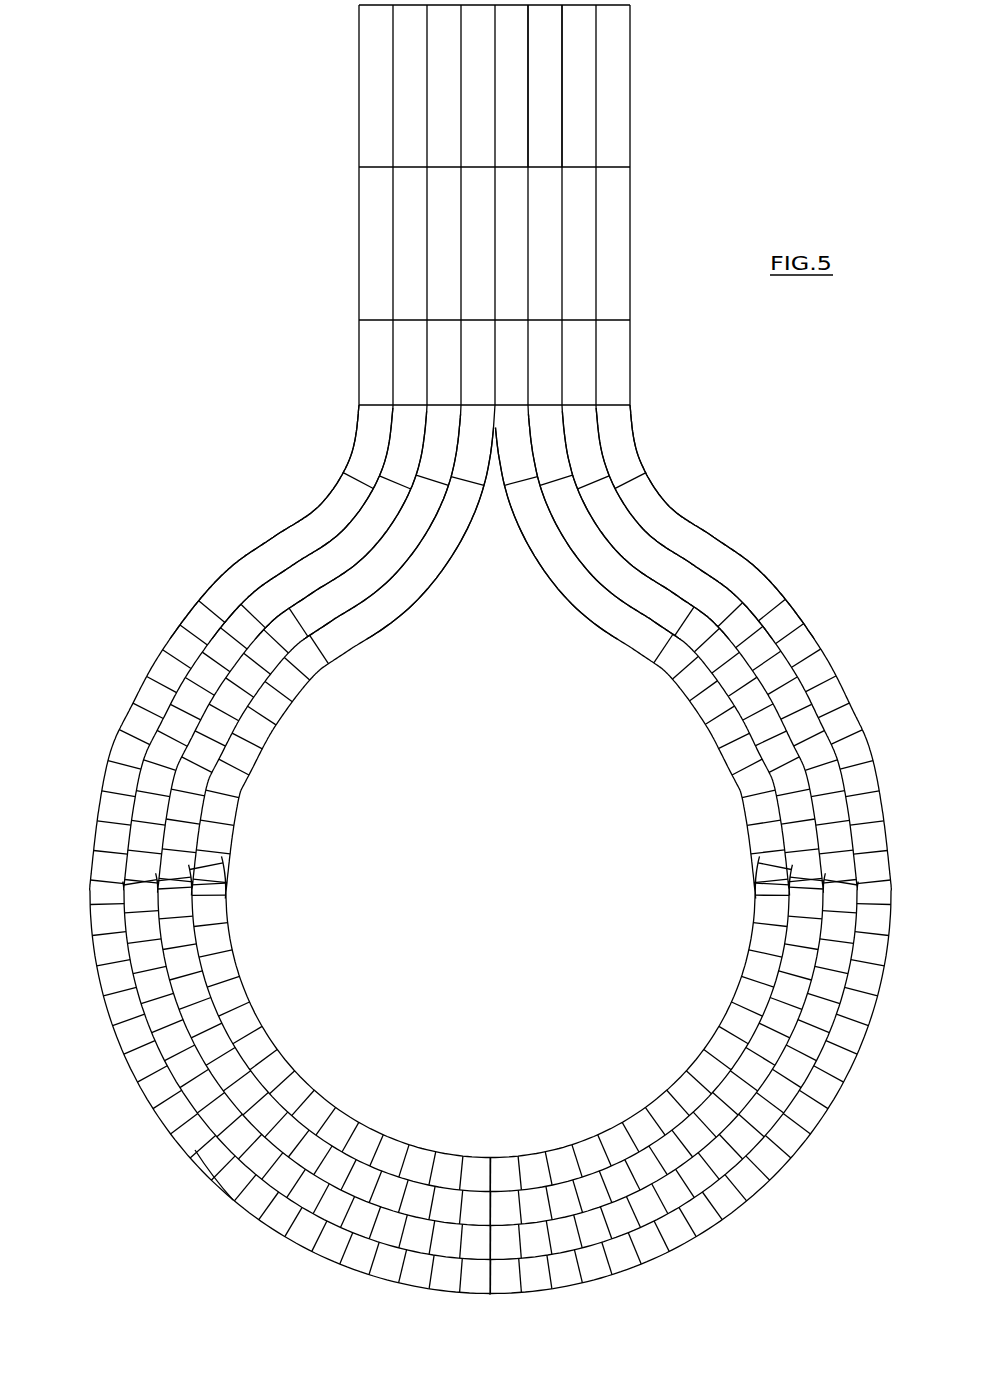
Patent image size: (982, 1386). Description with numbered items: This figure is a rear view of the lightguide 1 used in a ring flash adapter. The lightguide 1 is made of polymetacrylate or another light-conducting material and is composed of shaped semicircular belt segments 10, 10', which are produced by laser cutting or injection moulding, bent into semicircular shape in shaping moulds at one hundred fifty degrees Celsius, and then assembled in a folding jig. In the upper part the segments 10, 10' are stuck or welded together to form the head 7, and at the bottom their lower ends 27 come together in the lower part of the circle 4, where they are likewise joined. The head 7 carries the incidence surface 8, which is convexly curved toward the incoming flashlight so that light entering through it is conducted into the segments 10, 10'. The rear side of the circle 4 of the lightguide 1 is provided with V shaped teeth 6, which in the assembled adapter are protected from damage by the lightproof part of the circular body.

The lightguide 1 is at (312, 450).
The circle 4 is at (78, 813).
The V shaped teeth 6 is at (215, 1165).
The head 7 is at (338, 182).
The incidence surface 8 is at (538, 113).
The segment 10 is at (655, 522).
The segment 10' is at (332, 525).
The lower ends 27 is at (490, 1295).